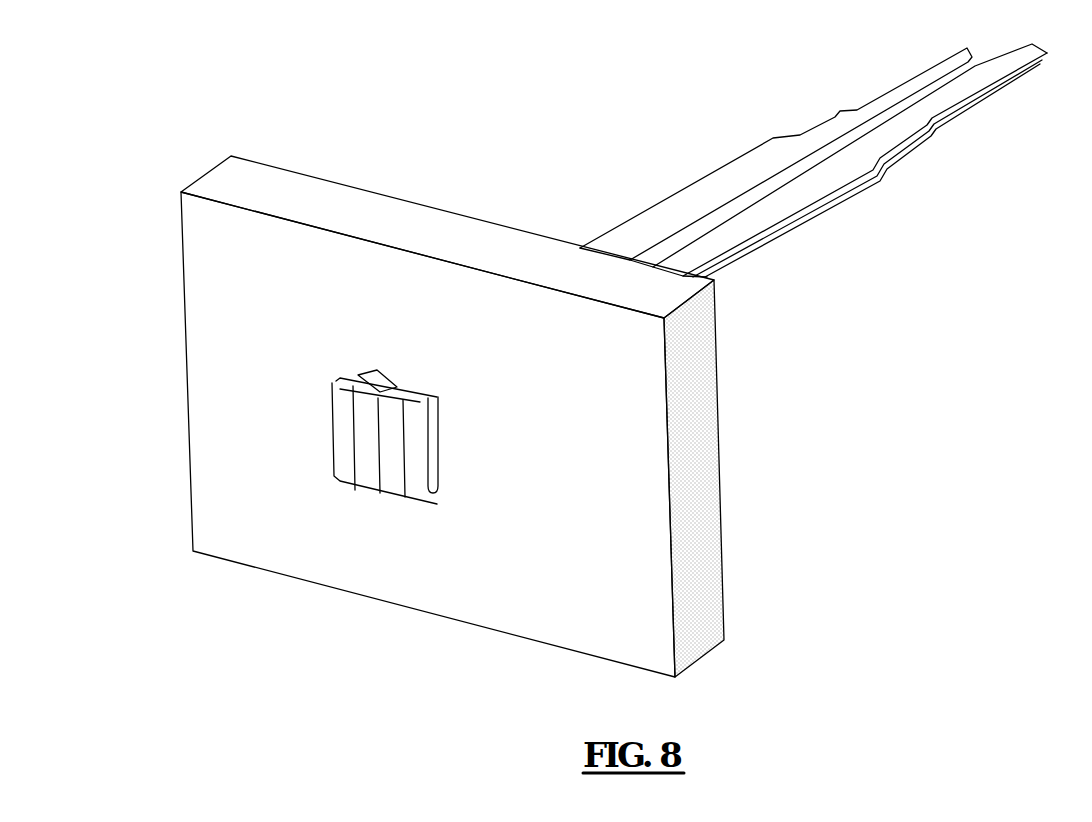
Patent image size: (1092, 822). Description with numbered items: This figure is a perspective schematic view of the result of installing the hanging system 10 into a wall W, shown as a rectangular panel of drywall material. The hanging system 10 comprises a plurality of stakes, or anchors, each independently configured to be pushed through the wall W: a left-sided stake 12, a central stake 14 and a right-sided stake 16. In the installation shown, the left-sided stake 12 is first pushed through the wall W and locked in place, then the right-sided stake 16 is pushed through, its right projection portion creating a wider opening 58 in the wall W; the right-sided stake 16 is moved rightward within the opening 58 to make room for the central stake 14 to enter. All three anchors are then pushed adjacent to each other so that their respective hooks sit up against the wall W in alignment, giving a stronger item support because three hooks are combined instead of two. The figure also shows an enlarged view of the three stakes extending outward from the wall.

The hanging system 10 is at (640, 108).
The left-sided stake 12 is at (633, 230).
The central stake 14 is at (847, 137).
The right-sided stake 16 is at (775, 210).
The opening 58 is at (358, 376).
The wall W is at (620, 604).